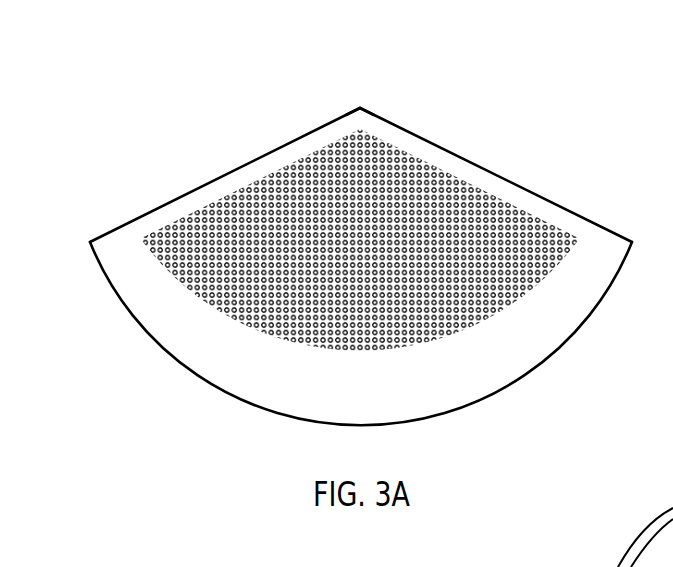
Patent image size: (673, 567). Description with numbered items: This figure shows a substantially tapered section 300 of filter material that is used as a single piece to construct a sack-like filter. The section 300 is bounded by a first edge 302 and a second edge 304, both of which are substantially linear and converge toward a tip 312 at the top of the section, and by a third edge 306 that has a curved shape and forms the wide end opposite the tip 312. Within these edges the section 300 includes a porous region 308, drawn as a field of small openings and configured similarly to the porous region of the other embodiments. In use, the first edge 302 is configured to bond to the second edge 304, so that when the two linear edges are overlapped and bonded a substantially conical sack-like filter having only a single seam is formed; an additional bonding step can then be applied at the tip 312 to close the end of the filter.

The section of filter material 300 is at (374, 241).
The first edge 302 is at (527, 186).
The second edge 304 is at (215, 182).
The third edge 306 is at (230, 383).
The porous region 308 is at (567, 247).
The tip 312 is at (362, 122).